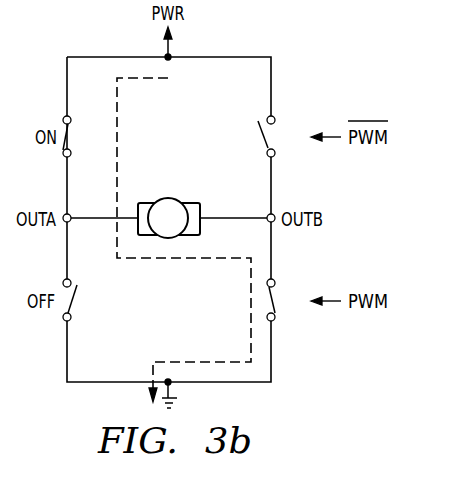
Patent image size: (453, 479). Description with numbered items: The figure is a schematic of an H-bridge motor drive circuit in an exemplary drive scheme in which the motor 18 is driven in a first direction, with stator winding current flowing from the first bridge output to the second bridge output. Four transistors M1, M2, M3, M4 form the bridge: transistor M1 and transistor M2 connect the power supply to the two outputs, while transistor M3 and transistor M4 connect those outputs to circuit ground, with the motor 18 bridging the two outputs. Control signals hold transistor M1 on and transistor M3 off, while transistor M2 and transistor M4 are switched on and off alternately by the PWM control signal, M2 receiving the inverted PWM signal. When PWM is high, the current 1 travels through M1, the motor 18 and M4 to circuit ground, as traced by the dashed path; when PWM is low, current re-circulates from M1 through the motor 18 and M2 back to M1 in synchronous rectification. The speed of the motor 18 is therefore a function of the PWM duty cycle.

The current path through motor (dashed) 1 is at (184, 240).
The motor 18 is at (170, 198).
The transistor M1 is at (82, 136).
The transistor M2 is at (279, 136).
The transistor M3 is at (82, 300).
The transistor M4 is at (284, 300).